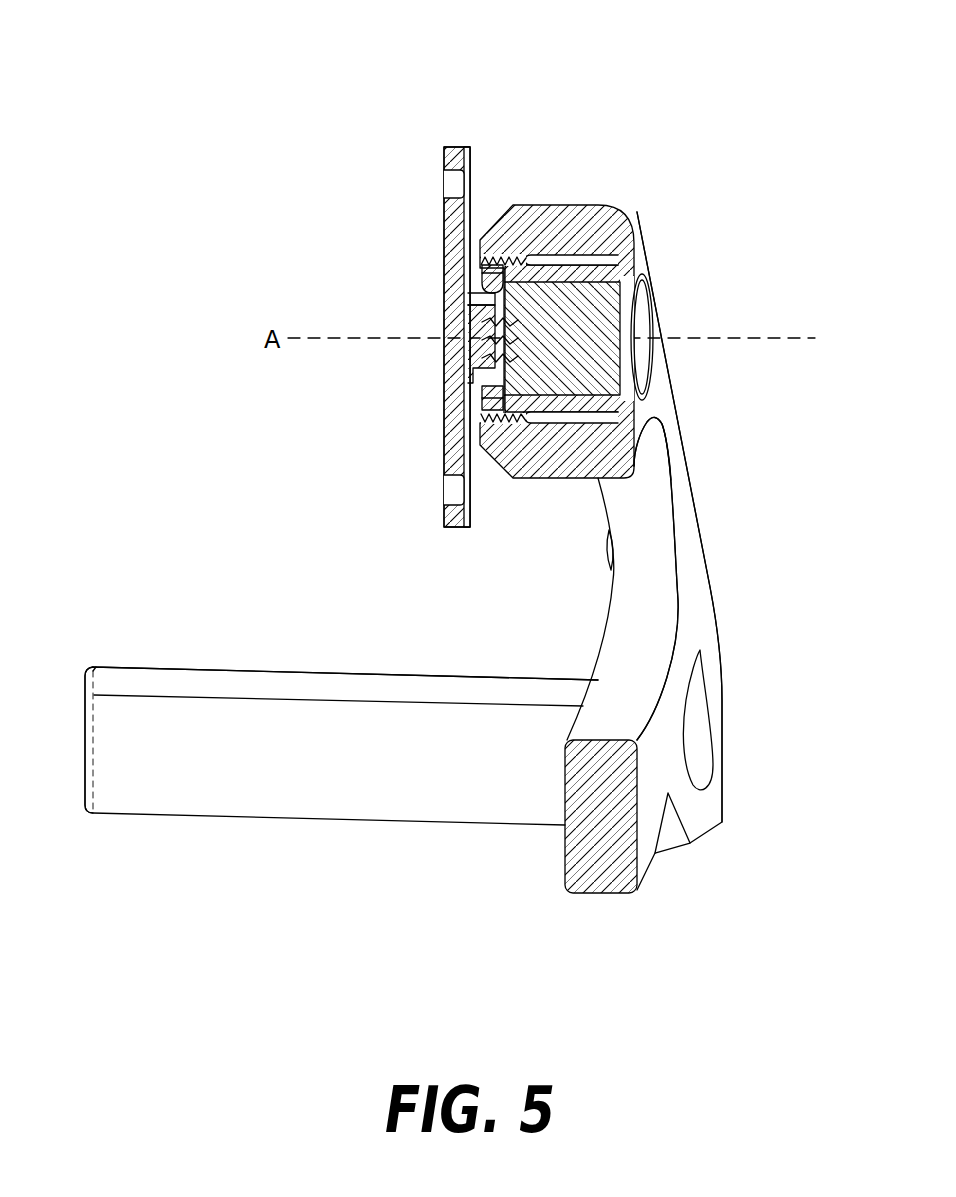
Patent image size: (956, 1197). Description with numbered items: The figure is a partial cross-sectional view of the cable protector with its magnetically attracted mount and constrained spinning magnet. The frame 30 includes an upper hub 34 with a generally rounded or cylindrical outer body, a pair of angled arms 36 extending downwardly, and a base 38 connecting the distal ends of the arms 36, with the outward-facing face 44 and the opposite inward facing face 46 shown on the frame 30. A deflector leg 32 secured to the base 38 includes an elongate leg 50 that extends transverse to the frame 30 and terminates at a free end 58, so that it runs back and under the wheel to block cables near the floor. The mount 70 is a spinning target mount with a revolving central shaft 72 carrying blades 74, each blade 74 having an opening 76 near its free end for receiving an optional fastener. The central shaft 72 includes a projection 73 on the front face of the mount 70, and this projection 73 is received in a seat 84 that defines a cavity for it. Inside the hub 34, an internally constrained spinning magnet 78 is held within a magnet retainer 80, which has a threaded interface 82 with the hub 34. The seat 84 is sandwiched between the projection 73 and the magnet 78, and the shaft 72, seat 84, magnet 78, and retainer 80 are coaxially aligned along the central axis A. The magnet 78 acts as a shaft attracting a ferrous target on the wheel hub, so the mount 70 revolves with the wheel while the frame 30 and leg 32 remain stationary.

The frame 30 is at (688, 484).
The deflector leg 32 is at (332, 817).
The upper hub 34 is at (606, 212).
The angled arm 36 is at (690, 555).
The base 38 is at (645, 882).
The outward-facing face 44 is at (672, 429).
The inward facing face 46 is at (616, 594).
The leg 50 is at (318, 682).
The free end 58 is at (88, 668).
The mount 70 is at (446, 238).
The central shaft 72 is at (480, 318).
The projection 73 is at (482, 357).
The blade 74 is at (445, 150).
The opening 76 is at (455, 186).
The spinning magnet 78 is at (590, 338).
The magnet retainer 80 is at (599, 268).
The threaded interface 82 is at (520, 260).
The seat 84 is at (478, 297).